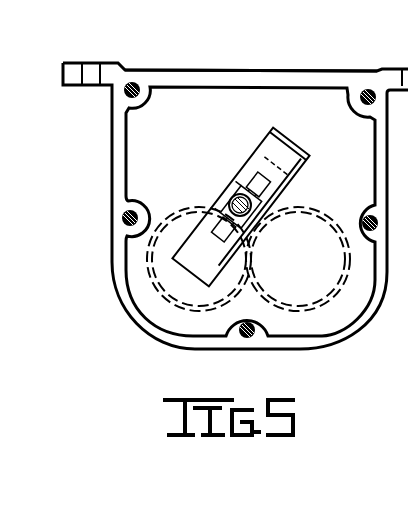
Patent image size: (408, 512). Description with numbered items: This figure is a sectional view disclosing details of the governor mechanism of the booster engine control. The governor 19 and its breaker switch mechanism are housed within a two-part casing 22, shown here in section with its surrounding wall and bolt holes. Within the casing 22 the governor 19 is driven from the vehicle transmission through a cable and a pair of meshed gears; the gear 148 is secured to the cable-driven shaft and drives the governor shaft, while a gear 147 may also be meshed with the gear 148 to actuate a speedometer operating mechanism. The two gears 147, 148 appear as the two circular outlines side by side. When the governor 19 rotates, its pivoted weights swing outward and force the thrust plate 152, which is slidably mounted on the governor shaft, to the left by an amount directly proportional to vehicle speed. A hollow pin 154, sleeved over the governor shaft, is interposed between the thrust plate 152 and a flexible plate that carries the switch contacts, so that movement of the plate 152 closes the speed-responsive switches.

The governor 19 is at (112, 163).
The two-part casing 22 is at (238, 82).
The gear 147 is at (172, 292).
The gear 148 is at (307, 300).
The thrust plate 152 is at (282, 152).
The hollow pin 154 is at (229, 203).